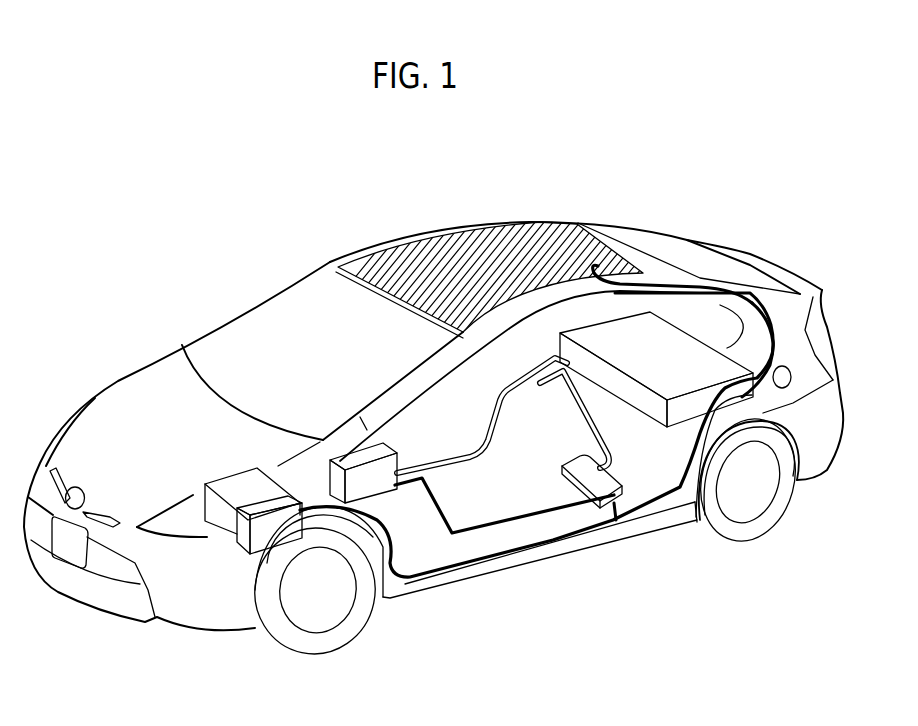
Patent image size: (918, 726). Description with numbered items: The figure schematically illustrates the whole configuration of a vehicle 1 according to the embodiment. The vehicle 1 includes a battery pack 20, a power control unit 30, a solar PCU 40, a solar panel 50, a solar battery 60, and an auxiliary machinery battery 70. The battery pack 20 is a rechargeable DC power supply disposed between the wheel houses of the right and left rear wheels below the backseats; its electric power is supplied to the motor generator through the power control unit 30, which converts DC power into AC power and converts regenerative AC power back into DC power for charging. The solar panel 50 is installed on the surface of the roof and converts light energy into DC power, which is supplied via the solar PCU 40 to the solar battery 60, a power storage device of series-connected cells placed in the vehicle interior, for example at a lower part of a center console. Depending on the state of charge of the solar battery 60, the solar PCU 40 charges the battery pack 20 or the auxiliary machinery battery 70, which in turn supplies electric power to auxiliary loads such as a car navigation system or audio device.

The vehicle 1 is at (213, 291).
The battery pack 20 is at (663, 335).
The power control unit 30 is at (231, 487).
The solar PCU 40 is at (583, 477).
The solar panel 50 is at (484, 240).
The solar battery 60 is at (373, 480).
The auxiliary machinery battery 70 is at (247, 545).